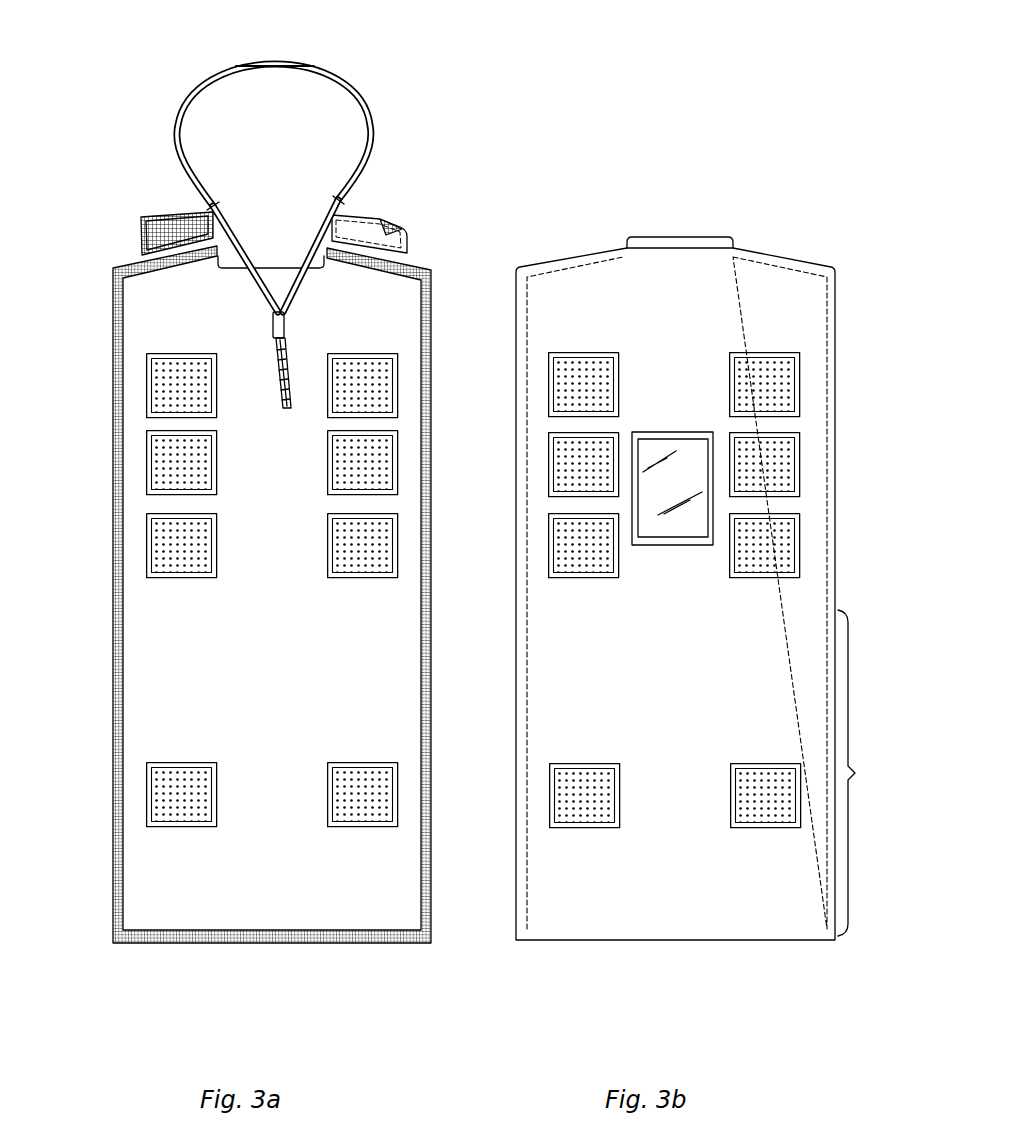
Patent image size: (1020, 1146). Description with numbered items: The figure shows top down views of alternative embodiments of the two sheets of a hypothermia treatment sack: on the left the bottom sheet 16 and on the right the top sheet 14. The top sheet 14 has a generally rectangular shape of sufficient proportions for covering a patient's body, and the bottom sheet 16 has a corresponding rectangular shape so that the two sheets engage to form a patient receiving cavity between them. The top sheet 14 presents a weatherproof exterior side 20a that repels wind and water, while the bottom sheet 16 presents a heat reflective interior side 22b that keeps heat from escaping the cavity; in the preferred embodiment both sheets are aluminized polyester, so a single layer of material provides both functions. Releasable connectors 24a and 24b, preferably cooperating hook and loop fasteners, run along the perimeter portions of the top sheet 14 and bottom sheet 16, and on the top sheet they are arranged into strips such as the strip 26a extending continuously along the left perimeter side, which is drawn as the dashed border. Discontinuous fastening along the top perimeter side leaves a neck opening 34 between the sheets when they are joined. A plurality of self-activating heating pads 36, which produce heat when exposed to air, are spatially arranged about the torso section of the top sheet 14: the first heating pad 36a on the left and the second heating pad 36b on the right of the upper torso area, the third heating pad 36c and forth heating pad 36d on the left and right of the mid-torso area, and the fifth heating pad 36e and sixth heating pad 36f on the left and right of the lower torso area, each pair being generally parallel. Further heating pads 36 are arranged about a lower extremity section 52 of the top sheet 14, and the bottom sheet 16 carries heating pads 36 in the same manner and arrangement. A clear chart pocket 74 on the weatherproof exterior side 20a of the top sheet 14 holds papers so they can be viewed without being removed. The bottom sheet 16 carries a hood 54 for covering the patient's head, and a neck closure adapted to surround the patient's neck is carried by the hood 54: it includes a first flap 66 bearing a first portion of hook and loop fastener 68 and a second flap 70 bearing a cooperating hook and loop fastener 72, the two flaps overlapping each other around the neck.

In FIG. 3B, the top sheet 14 is at (832, 210).
In FIG. 3A, the bottom sheet 16 is at (78, 742).
In FIG. 3B, the weatherproof exterior side 20a is at (596, 898).
In FIG. 3A, the heat reflective interior side 22b is at (138, 581).
In FIG. 3B, the releasable connector 24a is at (516, 813).
In FIG. 3A, the releasable connector 24b is at (112, 890).
In FIG. 3B, the strip 26a is at (514, 330).
In FIG. 3A, the neck opening 34 is at (308, 270).
In FIG. 3B, the neck opening 34 is at (681, 235).
In FIG. 3B, the self-activating heating pads 36 is at (745, 797).
In FIG. 3B, the first self-activating heating pad 36a is at (588, 368).
In FIG. 3B, the second self-activating heating pad 36b is at (762, 368).
In FIG. 3B, the third self-activating heating pad 36c is at (612, 445).
In FIG. 3B, the forth self-activating heating pad 36d is at (748, 465).
In FIG. 3B, the fifth self-activating heating pad 36e is at (603, 560).
In FIG. 3B, the sixth self-activating heating pad 36f is at (752, 560).
In FIG. 3B, the lower extremity section 52 is at (868, 773).
In FIG. 3A, the hood 54 is at (356, 95).
In FIG. 3A, the first flap 66 is at (350, 213).
In FIG. 3A, the hook and loop fastener 68 is at (398, 226).
In FIG. 3A, the second flap 70 is at (172, 215).
In FIG. 3A, the hook and loop fastener 72 is at (145, 236).
In FIG. 3B, the clear chart pocket 74 is at (672, 525).